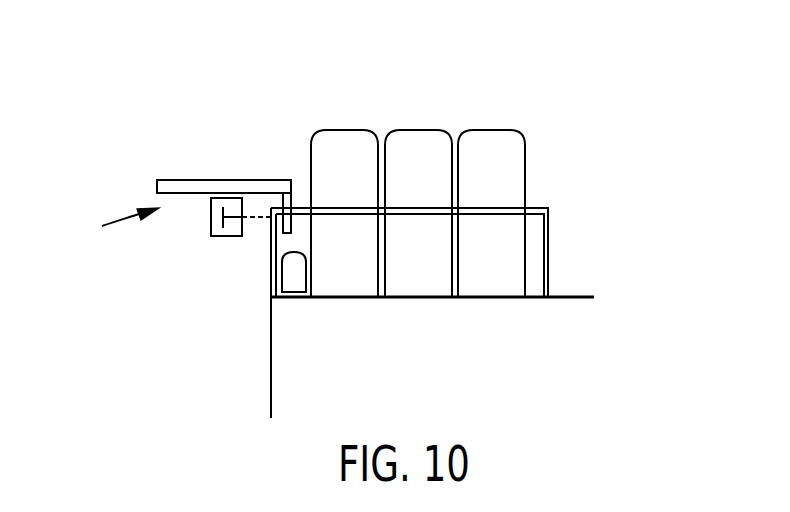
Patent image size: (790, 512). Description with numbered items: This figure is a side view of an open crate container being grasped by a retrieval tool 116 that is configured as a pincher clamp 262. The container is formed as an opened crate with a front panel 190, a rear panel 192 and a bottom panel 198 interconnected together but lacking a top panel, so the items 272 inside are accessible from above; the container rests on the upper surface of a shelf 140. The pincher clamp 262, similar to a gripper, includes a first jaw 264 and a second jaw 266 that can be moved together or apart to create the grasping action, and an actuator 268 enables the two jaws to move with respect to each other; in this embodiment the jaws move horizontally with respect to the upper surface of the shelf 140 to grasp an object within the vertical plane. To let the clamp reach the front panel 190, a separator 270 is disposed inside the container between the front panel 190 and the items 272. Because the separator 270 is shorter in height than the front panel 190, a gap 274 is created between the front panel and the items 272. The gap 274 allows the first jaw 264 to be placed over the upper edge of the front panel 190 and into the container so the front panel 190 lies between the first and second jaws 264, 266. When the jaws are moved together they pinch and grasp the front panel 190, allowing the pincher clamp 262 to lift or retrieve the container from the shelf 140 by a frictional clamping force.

The retrieval tool 116 is at (113, 226).
The shelf 140 is at (587, 295).
The front panel 190 is at (272, 248).
The rear panel 192 is at (550, 222).
The bottom panel 198 is at (548, 294).
The pincher clamp 262 is at (168, 180).
The first jaw 264 is at (296, 183).
The second jaw 266 is at (266, 221).
The actuator 268 is at (210, 227).
The separator 270 is at (293, 277).
The items 272 is at (527, 92).
The gap 274 is at (310, 152).